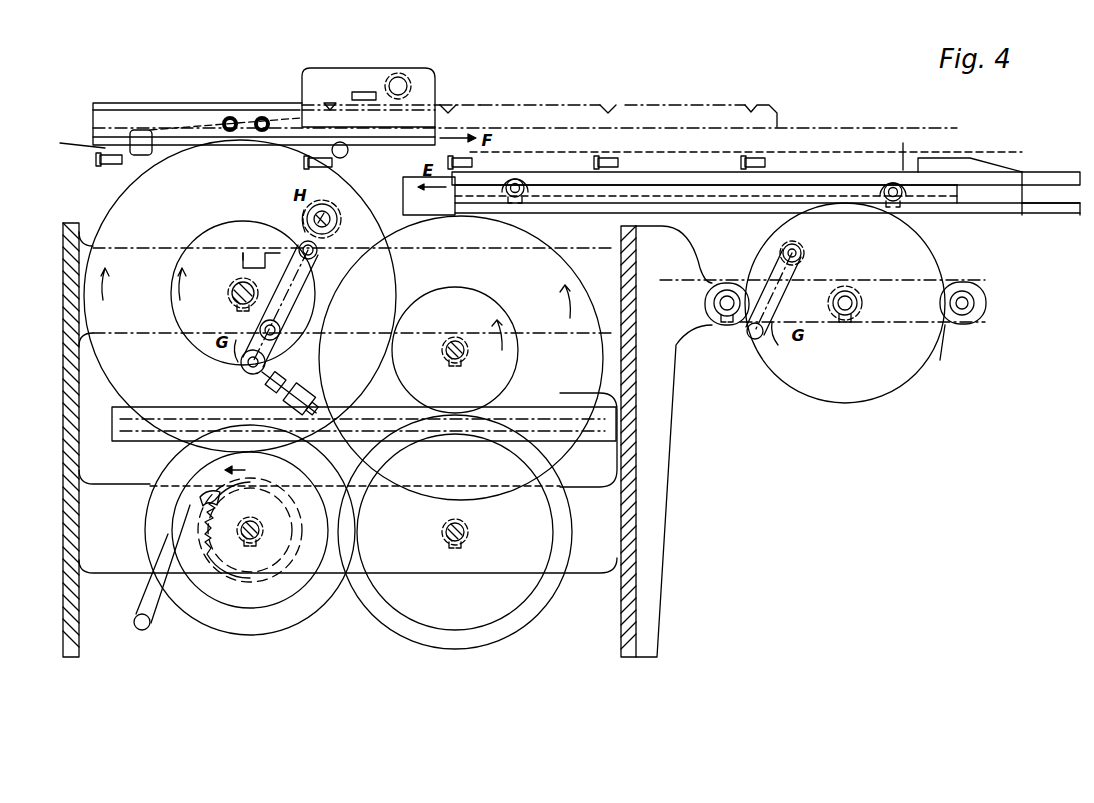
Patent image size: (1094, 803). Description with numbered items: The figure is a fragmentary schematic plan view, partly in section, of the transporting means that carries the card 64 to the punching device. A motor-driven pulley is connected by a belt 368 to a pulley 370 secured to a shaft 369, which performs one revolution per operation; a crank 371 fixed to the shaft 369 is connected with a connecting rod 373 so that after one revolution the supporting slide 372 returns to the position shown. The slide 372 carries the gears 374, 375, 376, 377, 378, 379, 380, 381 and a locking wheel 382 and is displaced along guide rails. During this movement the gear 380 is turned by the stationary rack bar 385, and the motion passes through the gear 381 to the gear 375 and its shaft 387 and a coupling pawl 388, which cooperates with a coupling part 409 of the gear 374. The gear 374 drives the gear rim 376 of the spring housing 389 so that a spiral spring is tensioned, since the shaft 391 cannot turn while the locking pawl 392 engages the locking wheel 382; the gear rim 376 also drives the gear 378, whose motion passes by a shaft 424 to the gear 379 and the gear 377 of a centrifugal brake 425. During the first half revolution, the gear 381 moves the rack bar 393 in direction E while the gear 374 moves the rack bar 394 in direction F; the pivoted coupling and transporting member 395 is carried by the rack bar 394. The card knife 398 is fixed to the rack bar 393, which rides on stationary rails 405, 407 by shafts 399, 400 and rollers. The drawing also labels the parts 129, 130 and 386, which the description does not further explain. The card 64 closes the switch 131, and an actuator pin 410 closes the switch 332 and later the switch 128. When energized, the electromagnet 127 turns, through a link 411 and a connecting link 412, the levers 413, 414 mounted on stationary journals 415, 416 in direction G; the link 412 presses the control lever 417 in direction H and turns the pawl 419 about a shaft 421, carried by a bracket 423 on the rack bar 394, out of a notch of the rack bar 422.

The card 64 is at (475, 144).
The electromagnet 127 is at (313, 370).
The switch 128 is at (606, 158).
The stop pin 129 is at (465, 158).
The pin 130 is at (340, 158).
The switch 131 is at (100, 160).
The switch 332 is at (752, 158).
The belt 368 is at (951, 368).
The shaft 369 is at (846, 323).
The pulley 370 is at (870, 396).
The crank 371 is at (958, 330).
The supporting slide 372 is at (645, 582).
The connecting rod 373 is at (981, 306).
The gear 374 is at (155, 163).
The gear 375 is at (193, 240).
The gear rim 376 is at (219, 565).
The gear 377 is at (332, 588).
The gear 378 is at (411, 640).
The gear 379 is at (482, 632).
The gear 380 is at (518, 350).
The gear 381 is at (602, 372).
The locking wheel 382 is at (202, 548).
The rack bar 385 is at (602, 432).
The shaft 386 is at (468, 358).
The shaft 387 is at (231, 293).
The coupling pawl 388 is at (240, 250).
The spring housing 389 is at (251, 608).
The shaft 391 is at (262, 540).
The locking pawl 392 is at (139, 631).
The rack bar 393 is at (636, 185).
The rack bar 394 is at (112, 115).
The coupling and transporting member 395 is at (141, 147).
The card knife 398 is at (942, 163).
The shaft 399 is at (515, 178).
The shaft 400 is at (892, 181).
The stationary rail 405 is at (1046, 178).
The stationary rail 407 is at (1045, 208).
The coupling part 409 is at (256, 262).
The actuator pin 410 is at (336, 157).
The link 411 is at (262, 361).
The connecting link 412 is at (694, 256).
The lever 413 is at (293, 296).
The lever 414 is at (773, 313).
The stationary journal 415 is at (280, 327).
The stationary journal 416 is at (756, 341).
The control lever 417 is at (340, 227).
The pawl 419 is at (322, 215).
The shaft 421 is at (399, 85).
The rack bar 422 is at (571, 105).
The bracket 423 is at (423, 100).
The shaft 424 is at (462, 546).
The centrifugal brake 425 is at (143, 537).